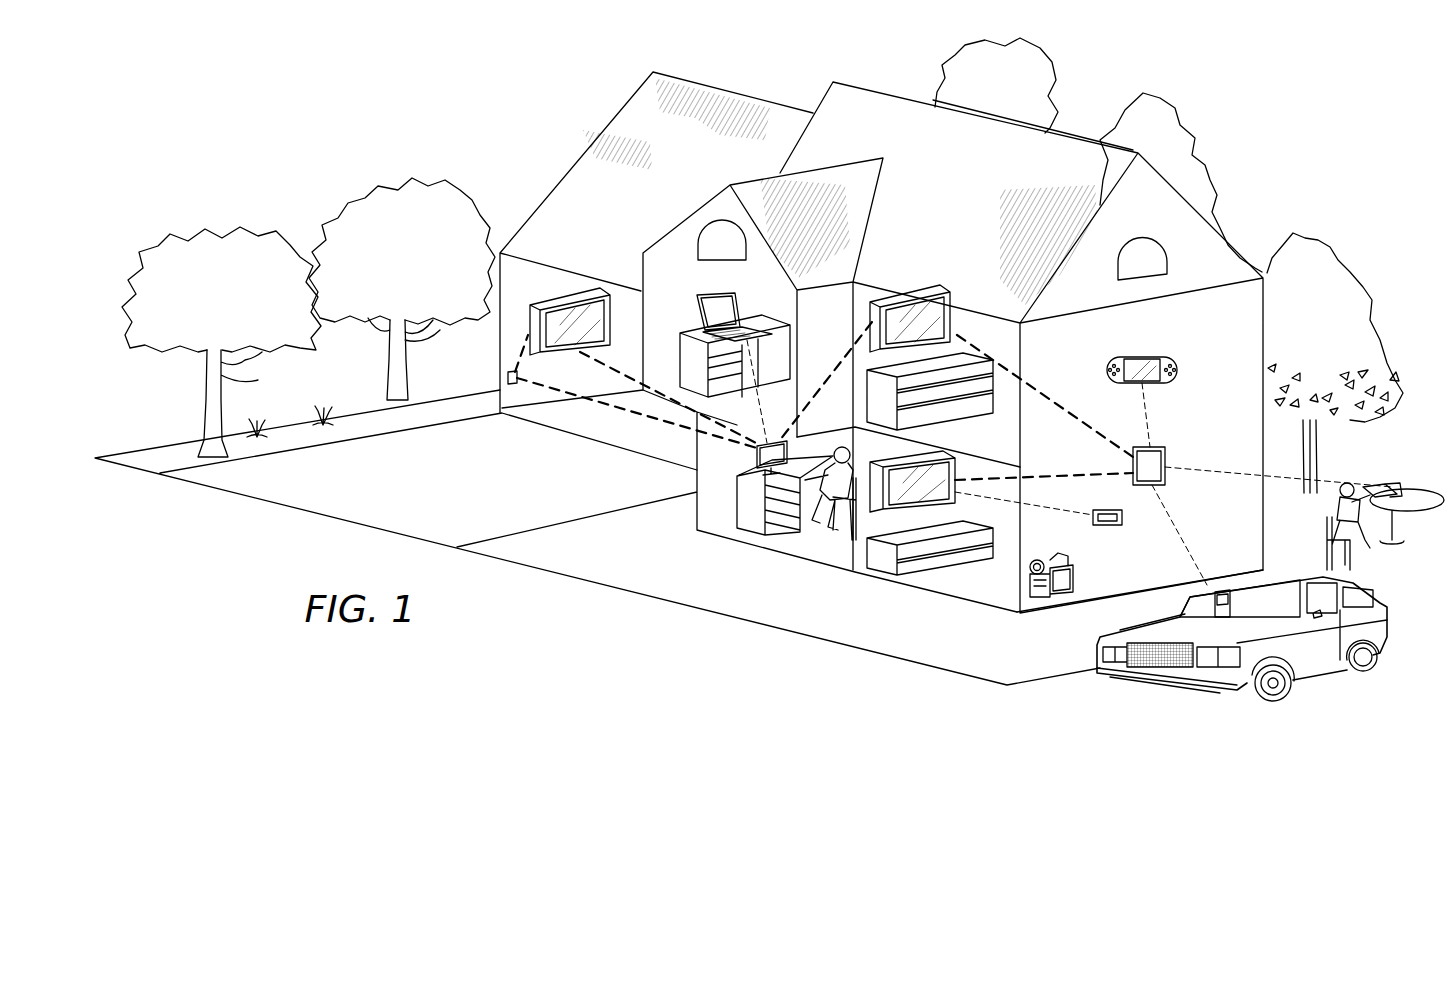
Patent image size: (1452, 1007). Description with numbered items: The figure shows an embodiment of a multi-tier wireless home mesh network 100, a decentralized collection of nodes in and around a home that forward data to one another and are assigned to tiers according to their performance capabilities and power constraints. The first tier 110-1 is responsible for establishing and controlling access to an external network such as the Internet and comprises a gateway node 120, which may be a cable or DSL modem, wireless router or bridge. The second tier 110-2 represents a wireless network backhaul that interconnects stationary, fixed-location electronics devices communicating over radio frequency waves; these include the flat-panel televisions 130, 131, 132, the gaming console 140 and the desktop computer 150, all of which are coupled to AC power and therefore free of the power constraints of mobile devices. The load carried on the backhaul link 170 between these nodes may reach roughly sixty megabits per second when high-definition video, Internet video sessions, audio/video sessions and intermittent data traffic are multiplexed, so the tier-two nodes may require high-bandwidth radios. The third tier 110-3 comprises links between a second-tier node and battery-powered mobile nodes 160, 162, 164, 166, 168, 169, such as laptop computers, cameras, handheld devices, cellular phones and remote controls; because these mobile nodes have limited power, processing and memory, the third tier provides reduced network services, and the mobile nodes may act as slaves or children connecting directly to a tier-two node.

The multi-tier wireless home mesh network 100 is at (1276, 122).
The first tier 110-1 is at (445, 408).
The second tier 110-2 is at (716, 472).
The third tier 110-3 is at (1118, 565).
The gateway node 120 is at (508, 375).
The flat-panel television 130 is at (558, 297).
The flat-panel television 131 is at (884, 302).
The flat-panel television 132 is at (868, 510).
The gaming console 140 is at (1160, 447).
The desktop computer 150 is at (770, 445).
The mobile node 160 is at (700, 323).
The mobile node 162 is at (1053, 597).
The mobile node 164 is at (1158, 357).
The mobile node 166 is at (1387, 485).
The mobile node 168 is at (1226, 590).
The mobile node 169 is at (1110, 510).
The backhaul link 170 is at (615, 411).